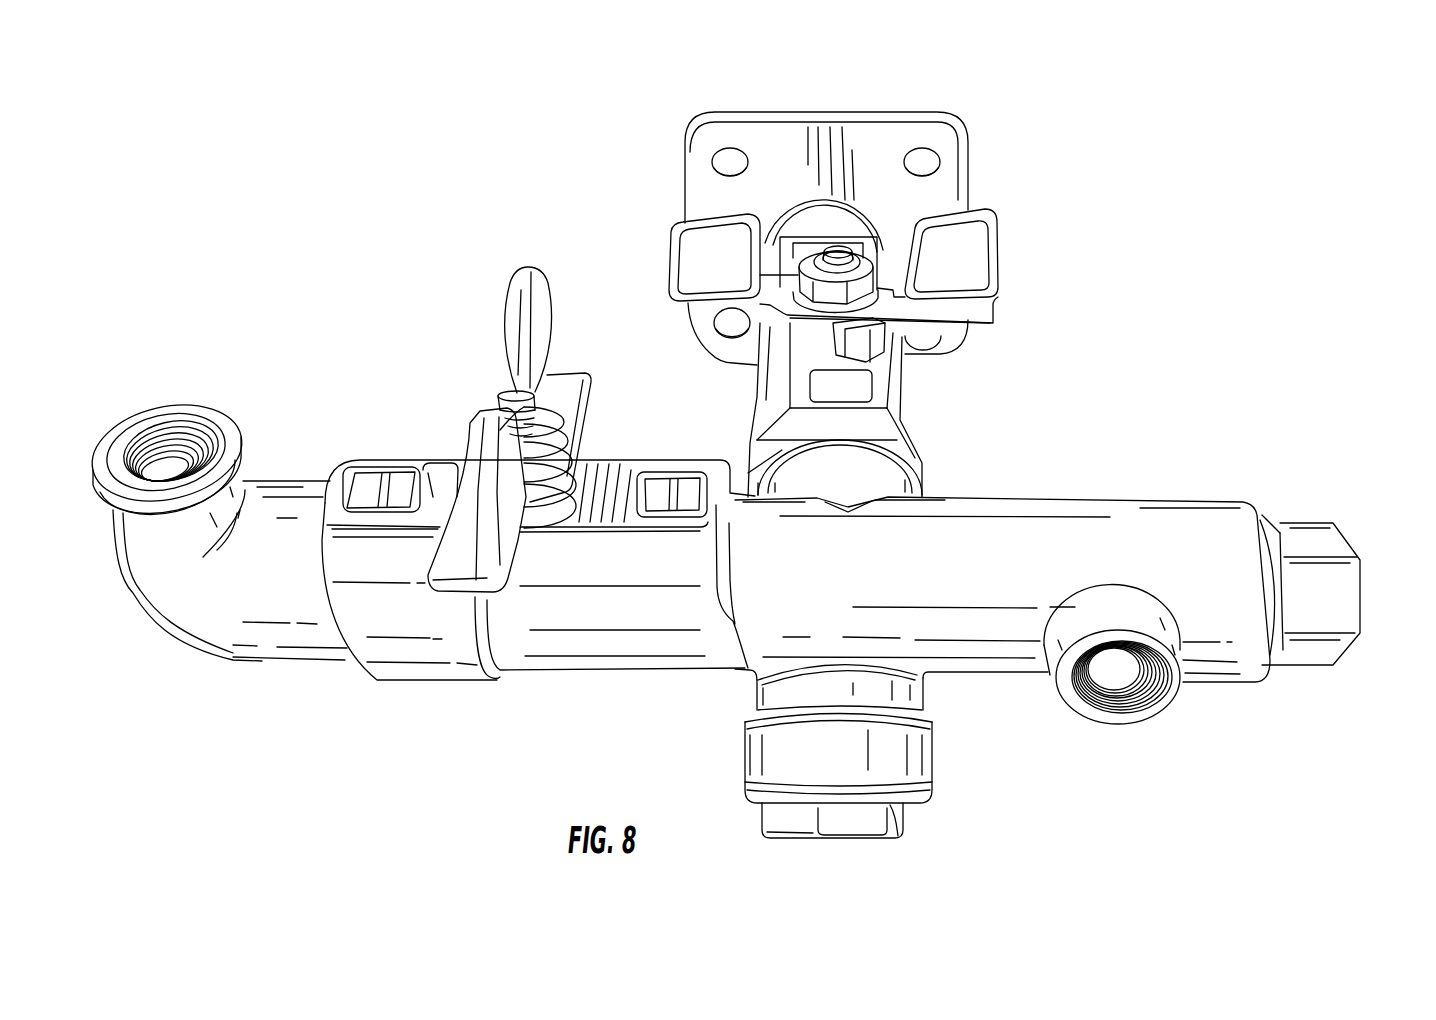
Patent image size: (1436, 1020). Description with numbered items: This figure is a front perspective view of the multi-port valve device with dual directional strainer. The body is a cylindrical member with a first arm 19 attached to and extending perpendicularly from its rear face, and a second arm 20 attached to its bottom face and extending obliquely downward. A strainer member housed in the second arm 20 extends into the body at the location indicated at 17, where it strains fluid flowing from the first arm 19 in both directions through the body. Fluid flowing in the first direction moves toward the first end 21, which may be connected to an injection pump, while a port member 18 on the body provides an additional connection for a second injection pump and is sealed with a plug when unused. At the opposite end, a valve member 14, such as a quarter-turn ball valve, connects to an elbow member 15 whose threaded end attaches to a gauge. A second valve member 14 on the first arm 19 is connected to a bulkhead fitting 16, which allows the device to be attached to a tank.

The valve member 14 is at (610, 468).
The elbow member 15 is at (263, 637).
The bulkhead fitting 16 is at (898, 136).
The location where strainer member extends into body 17 is at (797, 612).
The port member 18 is at (1123, 620).
The first arm 19 is at (870, 470).
The second arm 20 is at (908, 693).
The first end 21 is at (1366, 588).